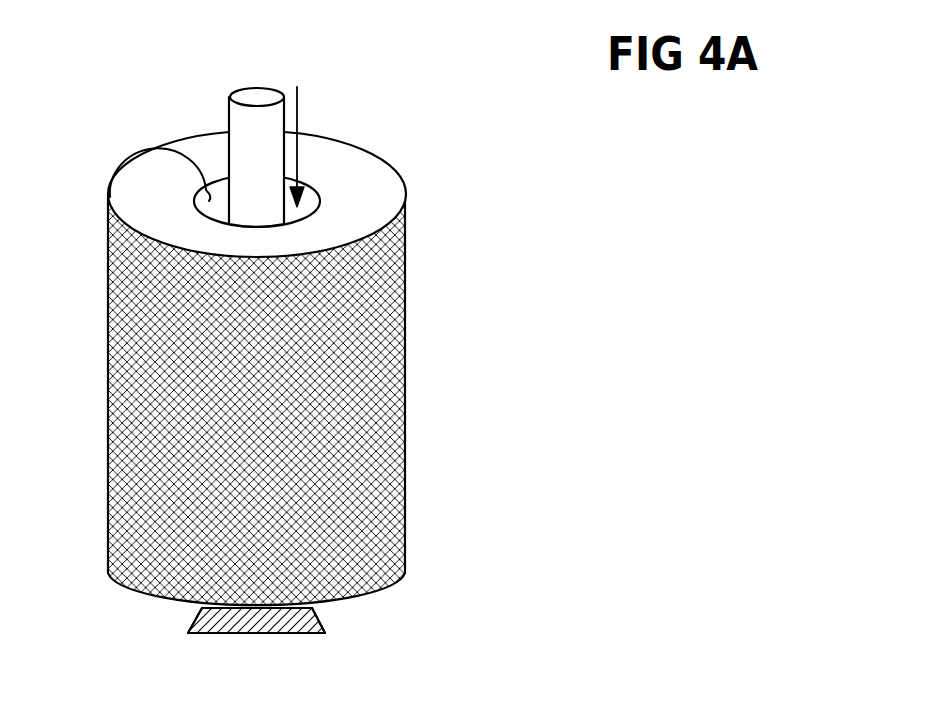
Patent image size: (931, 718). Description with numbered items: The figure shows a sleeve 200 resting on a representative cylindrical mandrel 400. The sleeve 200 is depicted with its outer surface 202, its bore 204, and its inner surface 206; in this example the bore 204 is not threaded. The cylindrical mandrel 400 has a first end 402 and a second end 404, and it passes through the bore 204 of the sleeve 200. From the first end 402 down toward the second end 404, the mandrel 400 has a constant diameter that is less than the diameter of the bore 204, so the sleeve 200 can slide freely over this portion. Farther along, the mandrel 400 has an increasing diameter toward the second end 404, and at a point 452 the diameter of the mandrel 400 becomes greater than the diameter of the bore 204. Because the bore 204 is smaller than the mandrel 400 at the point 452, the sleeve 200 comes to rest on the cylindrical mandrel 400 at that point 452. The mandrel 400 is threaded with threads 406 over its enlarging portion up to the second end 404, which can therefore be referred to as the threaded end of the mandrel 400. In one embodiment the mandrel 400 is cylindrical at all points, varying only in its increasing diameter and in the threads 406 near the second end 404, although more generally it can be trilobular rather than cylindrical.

The sleeve 200 is at (387, 182).
The outer surface 202 is at (384, 371).
The bore 204 is at (297, 132).
The inner surface 206 is at (132, 160).
The cylindrical mandrel 400 is at (228, 131).
The first end 402 is at (251, 97).
The second end 404 is at (319, 633).
The threads 406 is at (211, 627).
The point 452 is at (320, 607).